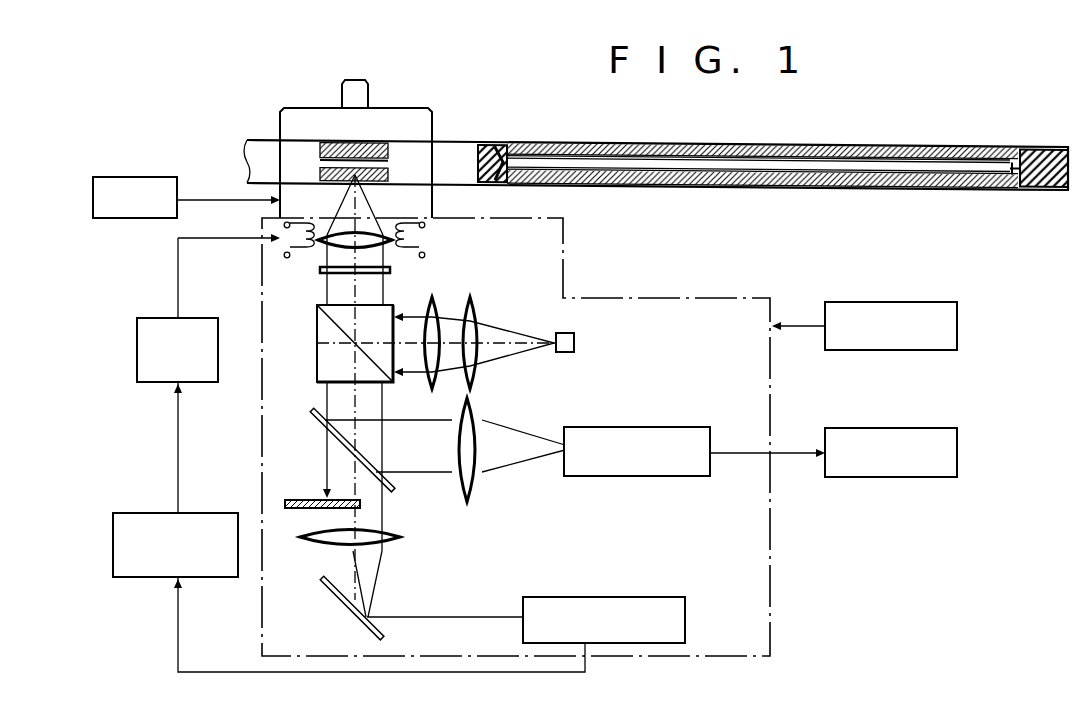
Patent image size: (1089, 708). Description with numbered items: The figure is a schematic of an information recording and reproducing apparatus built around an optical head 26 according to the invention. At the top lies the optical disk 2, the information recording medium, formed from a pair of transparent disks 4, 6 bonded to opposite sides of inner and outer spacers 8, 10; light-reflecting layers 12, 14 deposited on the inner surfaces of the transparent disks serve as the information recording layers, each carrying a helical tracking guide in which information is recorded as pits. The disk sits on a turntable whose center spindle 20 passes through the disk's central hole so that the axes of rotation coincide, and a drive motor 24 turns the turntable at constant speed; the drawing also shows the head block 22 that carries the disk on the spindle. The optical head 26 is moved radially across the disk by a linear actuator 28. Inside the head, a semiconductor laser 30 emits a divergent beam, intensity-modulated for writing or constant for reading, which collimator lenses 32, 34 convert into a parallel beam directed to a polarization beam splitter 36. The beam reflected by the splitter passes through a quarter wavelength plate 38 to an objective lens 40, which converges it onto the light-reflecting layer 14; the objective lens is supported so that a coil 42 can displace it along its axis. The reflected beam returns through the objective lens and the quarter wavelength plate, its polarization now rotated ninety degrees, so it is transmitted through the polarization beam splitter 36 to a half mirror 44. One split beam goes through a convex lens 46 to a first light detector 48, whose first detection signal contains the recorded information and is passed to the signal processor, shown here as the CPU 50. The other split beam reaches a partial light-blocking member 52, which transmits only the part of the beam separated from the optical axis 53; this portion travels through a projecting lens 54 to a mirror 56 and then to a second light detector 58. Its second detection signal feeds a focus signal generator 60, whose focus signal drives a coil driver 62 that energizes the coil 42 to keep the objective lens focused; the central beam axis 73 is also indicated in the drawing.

The optical disk 2 is at (568, 140).
The transparent disk 4 is at (886, 151).
The transparent disk 6 is at (663, 182).
The inner spacer 8 is at (500, 151).
The outer spacer 10 is at (1028, 153).
The light-reflecting layer 12 is at (933, 156).
The light-reflecting layer 14 is at (765, 182).
The center spindle 20 is at (368, 92).
The head block 22 is at (432, 122).
The drive motor 24 is at (139, 177).
The optical head 26 is at (648, 298).
The linear actuator 28 is at (914, 302).
The semiconductor laser 30 is at (575, 343).
The collimator lens 32 is at (478, 305).
The collimator lens 34 is at (434, 301).
The polarization beam splitter 36 is at (317, 352).
The quarter wavelength plate 38 is at (320, 270).
The objective lens 40 is at (392, 241).
The coil 42 is at (425, 238).
The half mirror 44 is at (321, 417).
The convex lens 46 is at (481, 406).
The first light detector 48 is at (664, 427).
The CPU 50 is at (914, 428).
The partial light-blocking member 52 is at (295, 500).
The optical axis 53 is at (352, 563).
The projecting lens 54 is at (385, 540).
The mirror 56 is at (324, 580).
The second light detector 58 is at (619, 597).
The focus signal generator 60 is at (145, 513).
The coil driver 62 is at (201, 383).
The optical axis 73 is at (352, 436).